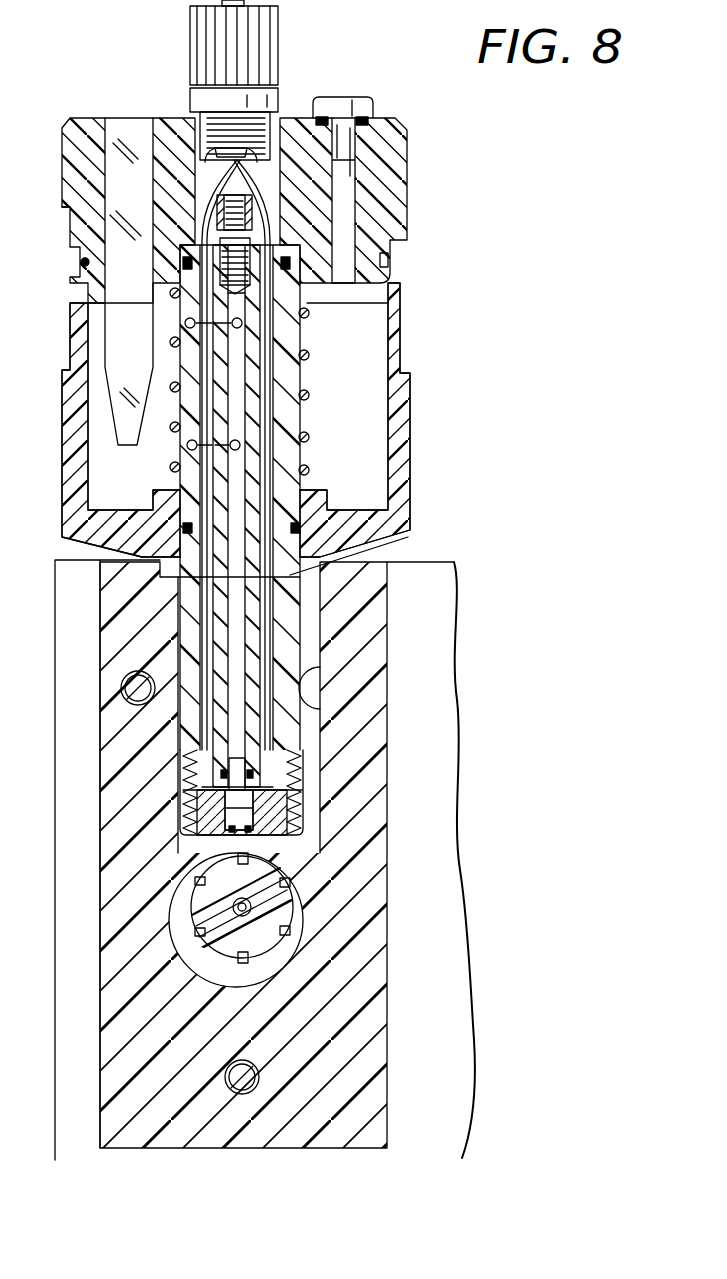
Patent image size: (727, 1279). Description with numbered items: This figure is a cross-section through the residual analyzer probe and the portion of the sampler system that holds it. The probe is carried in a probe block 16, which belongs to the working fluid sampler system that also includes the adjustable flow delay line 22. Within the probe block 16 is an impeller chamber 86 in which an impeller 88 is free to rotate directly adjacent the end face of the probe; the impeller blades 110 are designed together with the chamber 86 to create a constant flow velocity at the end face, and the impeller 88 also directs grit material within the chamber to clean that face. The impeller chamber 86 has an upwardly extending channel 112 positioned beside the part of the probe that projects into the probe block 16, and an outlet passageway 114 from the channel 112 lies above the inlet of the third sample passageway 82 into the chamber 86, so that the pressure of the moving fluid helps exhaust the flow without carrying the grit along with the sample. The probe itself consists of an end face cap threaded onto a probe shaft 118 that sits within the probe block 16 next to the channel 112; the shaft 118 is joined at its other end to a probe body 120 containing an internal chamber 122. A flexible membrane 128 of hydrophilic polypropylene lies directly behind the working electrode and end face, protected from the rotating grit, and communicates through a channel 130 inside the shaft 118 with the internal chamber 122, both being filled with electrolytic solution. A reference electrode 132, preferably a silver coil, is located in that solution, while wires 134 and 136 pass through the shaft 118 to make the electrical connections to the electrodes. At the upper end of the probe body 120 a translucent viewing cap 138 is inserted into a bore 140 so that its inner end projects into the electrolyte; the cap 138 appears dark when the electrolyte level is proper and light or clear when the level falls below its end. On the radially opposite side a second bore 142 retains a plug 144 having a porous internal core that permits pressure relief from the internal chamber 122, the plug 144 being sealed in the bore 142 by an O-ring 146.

The probe block 16 is at (373, 1050).
The adjustable flow delay line 22 is at (452, 1128).
The third sample passageway 82 is at (333, 907).
The impeller chamber 86 is at (297, 937).
The impeller 88 is at (270, 953).
The impeller blades 110 is at (205, 965).
The channel 112 is at (307, 750).
The outlet passageway 114 is at (316, 688).
The probe shaft 118 is at (290, 575).
The probe body 120 is at (403, 350).
The internal chamber 122 is at (373, 390).
The flexible membrane 128 is at (237, 818).
The channel 130 is at (237, 707).
The reference electrode 132 is at (309, 355).
The wire 134 is at (266, 612).
The wire 136 is at (206, 612).
The viewing cap 138 is at (140, 127).
The bore 140 is at (99, 142).
The second bore 142 is at (347, 207).
The plug 144 is at (345, 103).
The O-ring 146 is at (380, 117).